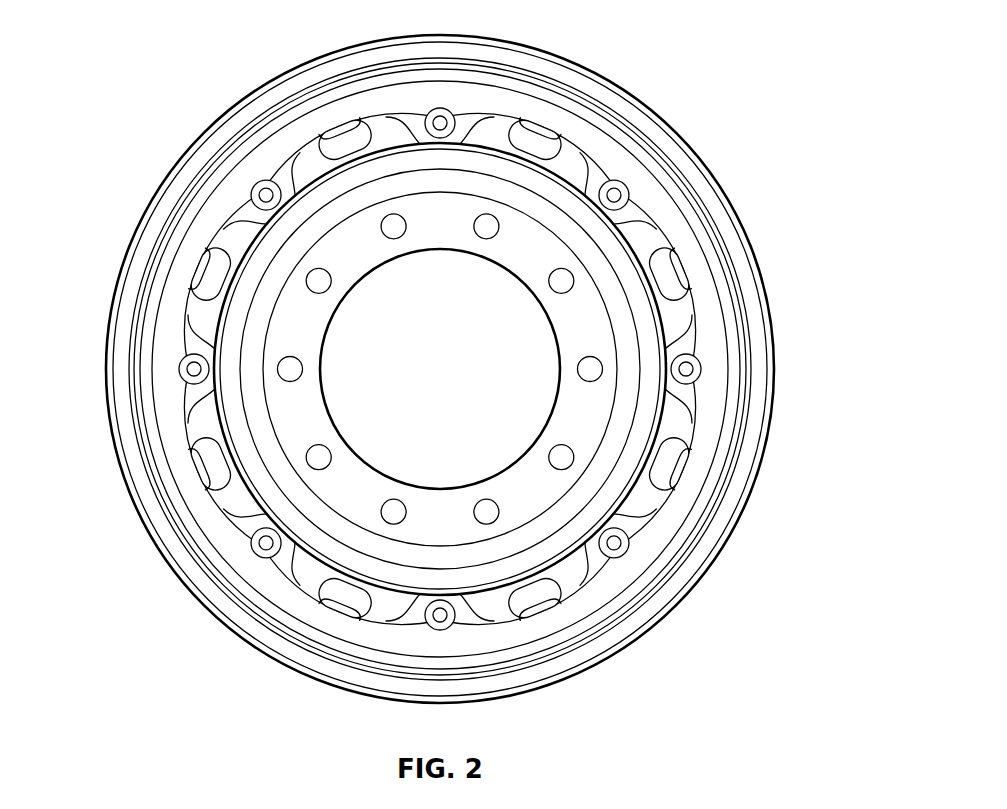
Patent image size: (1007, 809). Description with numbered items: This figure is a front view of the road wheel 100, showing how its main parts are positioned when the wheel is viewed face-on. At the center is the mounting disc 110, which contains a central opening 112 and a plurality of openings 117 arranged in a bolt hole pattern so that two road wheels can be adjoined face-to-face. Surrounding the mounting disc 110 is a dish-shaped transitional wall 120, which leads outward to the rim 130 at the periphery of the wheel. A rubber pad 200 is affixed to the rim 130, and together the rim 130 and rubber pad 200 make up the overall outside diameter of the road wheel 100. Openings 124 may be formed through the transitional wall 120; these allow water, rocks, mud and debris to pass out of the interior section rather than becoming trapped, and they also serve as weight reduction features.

The road wheel 100 is at (222, 95).
The rubber pad 200 is at (597, 93).
The central opening 112 is at (325, 327).
The openings 124 is at (675, 470).
The mounting disc 110 is at (322, 485).
The openings 117 is at (378, 512).
The dish-shaped transitional wall 120 is at (550, 545).
The rim 130 is at (683, 555).